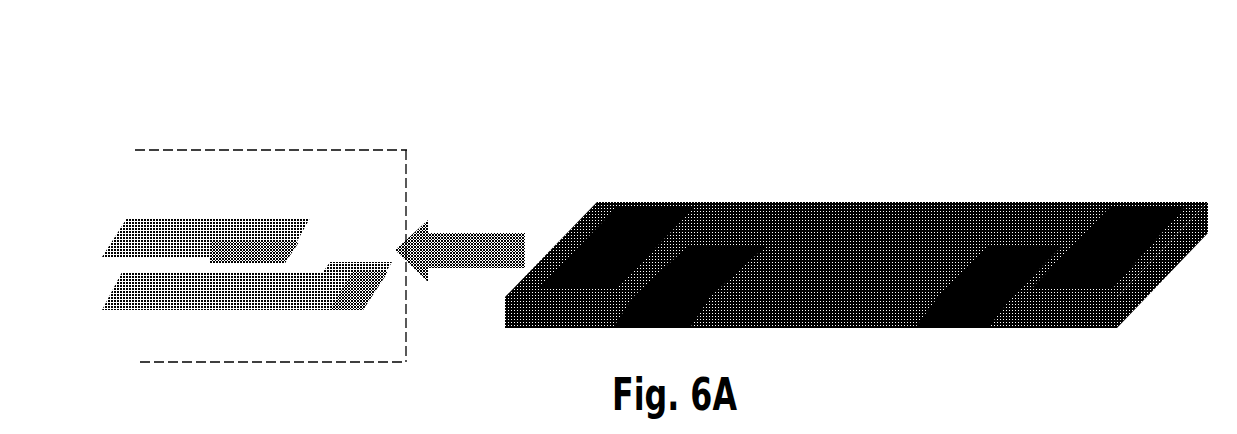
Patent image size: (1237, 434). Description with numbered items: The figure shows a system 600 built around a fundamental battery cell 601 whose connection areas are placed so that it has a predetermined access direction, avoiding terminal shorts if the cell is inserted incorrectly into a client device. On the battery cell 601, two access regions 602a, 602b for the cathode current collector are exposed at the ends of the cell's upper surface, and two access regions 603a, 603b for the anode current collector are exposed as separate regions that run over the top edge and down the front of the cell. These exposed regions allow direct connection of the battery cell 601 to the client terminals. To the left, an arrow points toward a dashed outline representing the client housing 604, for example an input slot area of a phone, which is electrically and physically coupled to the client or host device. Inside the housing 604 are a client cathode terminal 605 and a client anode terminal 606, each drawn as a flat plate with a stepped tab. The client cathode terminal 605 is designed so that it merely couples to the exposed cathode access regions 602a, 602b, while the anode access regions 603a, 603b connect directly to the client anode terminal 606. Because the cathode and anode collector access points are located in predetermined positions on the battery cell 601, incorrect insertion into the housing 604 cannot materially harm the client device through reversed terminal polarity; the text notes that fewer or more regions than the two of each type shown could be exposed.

The system 600 is at (866, 252).
The battery cell 601 is at (840, 200).
The access region for the cathode current collector 602a is at (618, 220).
The access region for the cathode current collector 602b is at (1125, 228).
The access region for the anode current collector 603a is at (667, 310).
The access region for the anode current collector 603b is at (968, 310).
The housing 604 is at (278, 233).
The client cathode terminal 605 is at (208, 240).
The client anode terminal 606 is at (350, 277).